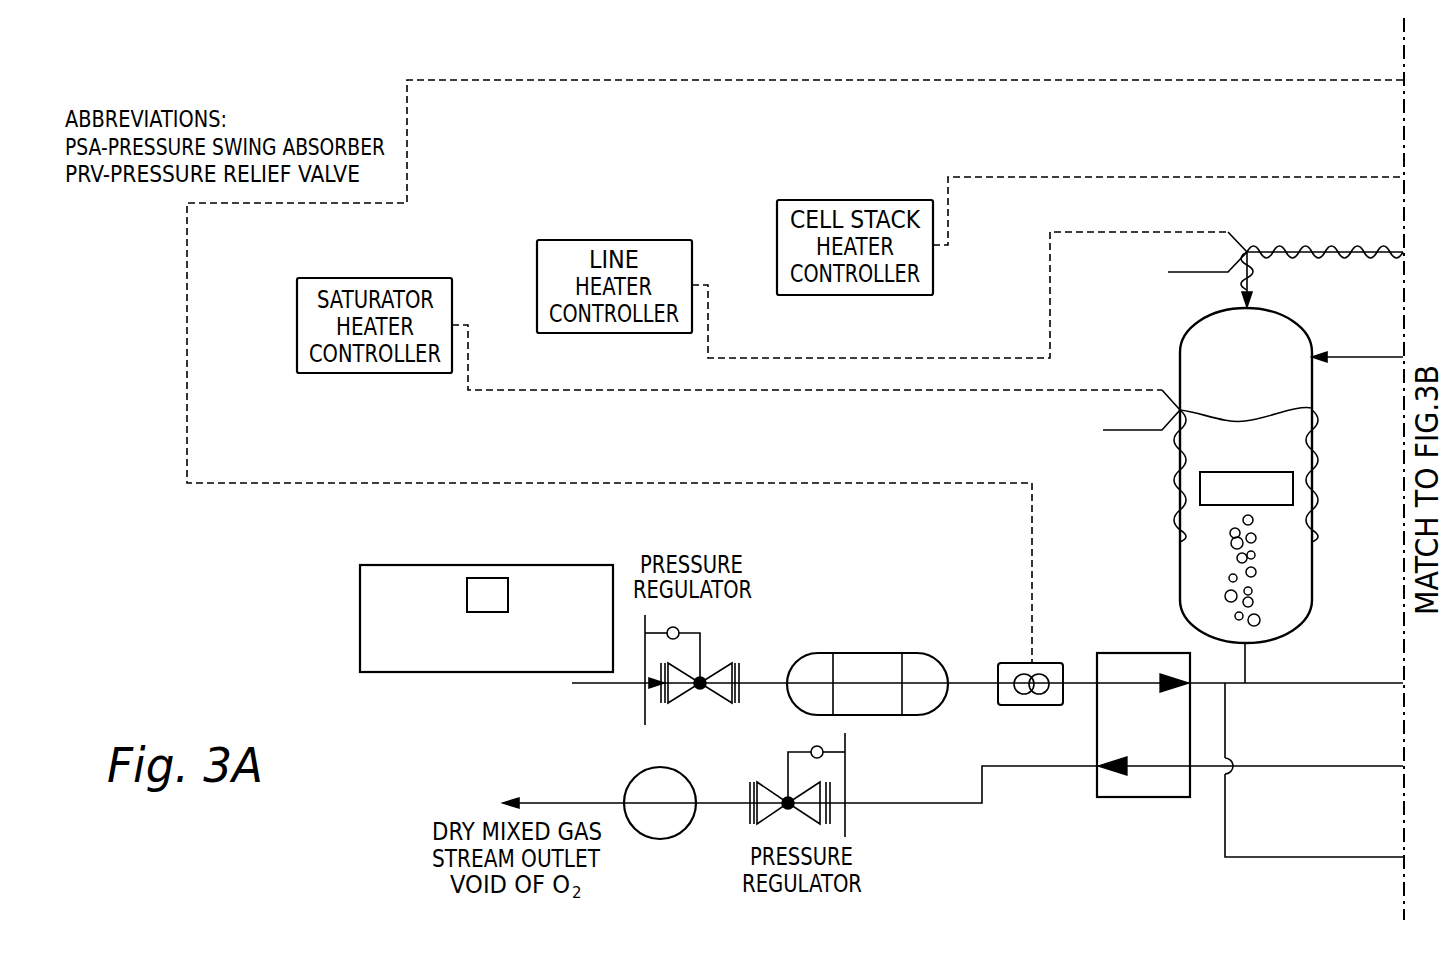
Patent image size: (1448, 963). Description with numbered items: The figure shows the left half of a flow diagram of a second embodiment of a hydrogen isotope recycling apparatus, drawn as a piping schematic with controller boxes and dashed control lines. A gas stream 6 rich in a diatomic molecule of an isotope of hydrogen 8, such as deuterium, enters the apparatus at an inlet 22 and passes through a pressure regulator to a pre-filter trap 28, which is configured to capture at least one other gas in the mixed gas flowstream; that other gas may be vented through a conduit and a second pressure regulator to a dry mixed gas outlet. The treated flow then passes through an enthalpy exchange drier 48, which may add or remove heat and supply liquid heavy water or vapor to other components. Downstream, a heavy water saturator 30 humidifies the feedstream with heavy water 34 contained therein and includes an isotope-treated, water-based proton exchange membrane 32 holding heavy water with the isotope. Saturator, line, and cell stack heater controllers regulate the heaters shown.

The gas stream 6 is at (410, 556).
The isotope of hydrogen 8 is at (453, 599).
The inlet 22 is at (553, 699).
The pre-filter trap 28 is at (947, 653).
The saturator 30 is at (1166, 346).
The isotope-treated, water-based proton exchange membrane 32 is at (1243, 488).
The heavy water 34 is at (1210, 564).
The enthalpy exchange drier 48 is at (1082, 785).